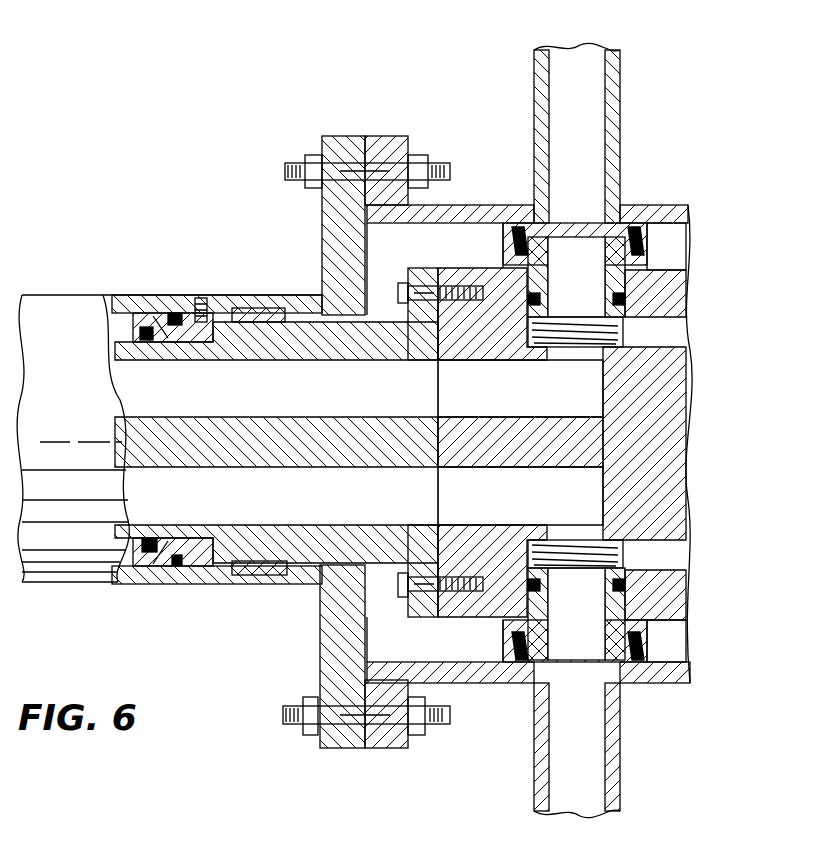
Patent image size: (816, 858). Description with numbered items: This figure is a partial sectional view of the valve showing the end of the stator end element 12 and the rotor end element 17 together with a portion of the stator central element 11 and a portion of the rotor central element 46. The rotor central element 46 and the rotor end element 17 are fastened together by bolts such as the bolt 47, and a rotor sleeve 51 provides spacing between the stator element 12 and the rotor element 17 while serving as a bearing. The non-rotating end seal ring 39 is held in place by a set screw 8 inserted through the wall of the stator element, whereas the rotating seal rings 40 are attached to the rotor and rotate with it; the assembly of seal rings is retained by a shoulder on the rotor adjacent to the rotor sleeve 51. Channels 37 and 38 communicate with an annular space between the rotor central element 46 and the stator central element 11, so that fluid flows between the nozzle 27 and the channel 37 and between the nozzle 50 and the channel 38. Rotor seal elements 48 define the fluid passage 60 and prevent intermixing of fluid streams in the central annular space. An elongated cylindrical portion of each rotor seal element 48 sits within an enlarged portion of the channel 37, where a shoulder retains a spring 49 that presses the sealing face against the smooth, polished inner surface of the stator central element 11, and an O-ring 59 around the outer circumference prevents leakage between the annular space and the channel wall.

The set screw 8 is at (200, 298).
The stator central element 11 is at (505, 182).
The stator end element 12 is at (62, 295).
The rotor end element 17 is at (372, 315).
The nozzle 27 is at (620, 158).
The channel 37 is at (262, 394).
The channel 38 is at (192, 497).
The end seal ring 39 is at (225, 540).
The rotating seal ring 40 is at (135, 342).
The rotor central element 46 is at (478, 268).
The bolt 47 is at (403, 592).
The rotor seal element 48 is at (683, 272).
The spring 49 is at (615, 328).
The nozzle 50 is at (620, 745).
The rotor sleeve 51 is at (240, 308).
The O-ring 59 is at (528, 298).
The fluid passage 60 is at (594, 269).